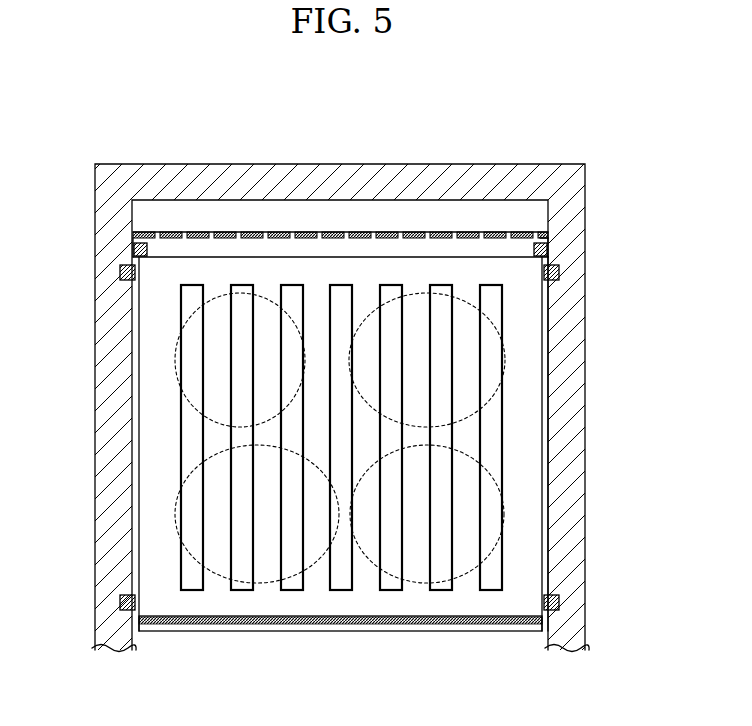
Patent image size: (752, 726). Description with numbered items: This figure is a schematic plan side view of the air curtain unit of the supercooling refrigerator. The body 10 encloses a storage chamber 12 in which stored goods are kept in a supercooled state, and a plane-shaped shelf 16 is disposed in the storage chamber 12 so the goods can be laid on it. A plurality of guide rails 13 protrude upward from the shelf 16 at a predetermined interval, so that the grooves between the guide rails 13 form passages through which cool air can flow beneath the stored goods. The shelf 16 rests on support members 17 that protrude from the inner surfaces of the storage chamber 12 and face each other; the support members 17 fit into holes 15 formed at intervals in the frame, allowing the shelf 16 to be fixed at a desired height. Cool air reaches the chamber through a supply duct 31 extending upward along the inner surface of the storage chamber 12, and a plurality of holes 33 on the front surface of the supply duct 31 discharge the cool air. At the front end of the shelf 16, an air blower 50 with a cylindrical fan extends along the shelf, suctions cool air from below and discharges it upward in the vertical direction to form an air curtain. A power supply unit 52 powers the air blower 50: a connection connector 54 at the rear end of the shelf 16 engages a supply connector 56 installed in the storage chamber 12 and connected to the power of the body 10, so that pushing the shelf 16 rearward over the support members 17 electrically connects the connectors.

The body 10 is at (577, 212).
The storage chamber 12 is at (190, 250).
The guide rails 13 is at (340, 482).
The holes 15 is at (120, 272).
The shelves 16 is at (520, 416).
The support members 17 is at (556, 282).
The supply duct 31 is at (230, 215).
The holes 33 is at (318, 232).
The air blower 50 is at (450, 632).
The power supply unit 52 is at (541, 240).
The connection connector 54 is at (550, 254).
The supply connector 56 is at (548, 250).